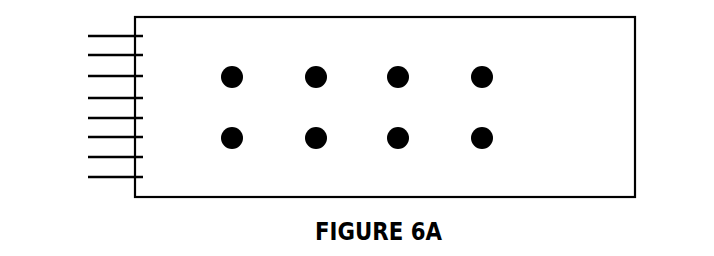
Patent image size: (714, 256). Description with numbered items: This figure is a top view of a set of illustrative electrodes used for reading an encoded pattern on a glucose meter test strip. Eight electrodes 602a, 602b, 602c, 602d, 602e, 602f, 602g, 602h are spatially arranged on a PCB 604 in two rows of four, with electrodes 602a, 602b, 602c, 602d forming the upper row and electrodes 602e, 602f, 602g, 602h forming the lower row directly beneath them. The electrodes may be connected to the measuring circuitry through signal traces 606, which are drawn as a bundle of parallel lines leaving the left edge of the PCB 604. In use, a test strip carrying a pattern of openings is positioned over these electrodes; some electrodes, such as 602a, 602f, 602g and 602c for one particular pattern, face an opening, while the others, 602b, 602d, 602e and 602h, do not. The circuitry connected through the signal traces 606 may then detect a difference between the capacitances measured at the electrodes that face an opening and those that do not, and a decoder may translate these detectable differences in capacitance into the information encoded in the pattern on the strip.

The electrode 602a is at (233, 61).
The electrode 602b is at (317, 61).
The electrode 602c is at (400, 61).
The electrode 602d is at (486, 61).
The electrode 602e is at (233, 124).
The electrode 602f is at (315, 124).
The electrode 602g is at (401, 124).
The electrode 602h is at (486, 124).
The PCB 604 is at (385, 107).
The signal traces 606 is at (82, 10).